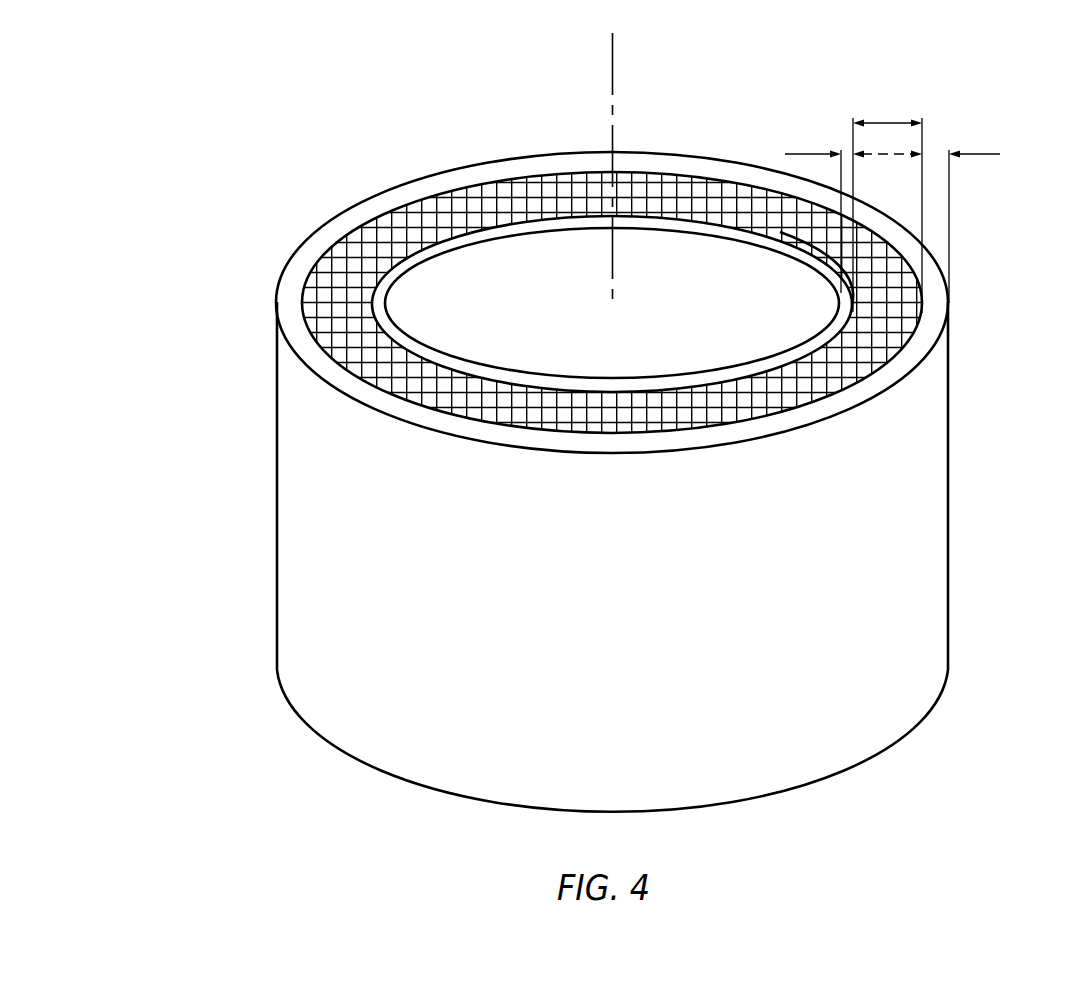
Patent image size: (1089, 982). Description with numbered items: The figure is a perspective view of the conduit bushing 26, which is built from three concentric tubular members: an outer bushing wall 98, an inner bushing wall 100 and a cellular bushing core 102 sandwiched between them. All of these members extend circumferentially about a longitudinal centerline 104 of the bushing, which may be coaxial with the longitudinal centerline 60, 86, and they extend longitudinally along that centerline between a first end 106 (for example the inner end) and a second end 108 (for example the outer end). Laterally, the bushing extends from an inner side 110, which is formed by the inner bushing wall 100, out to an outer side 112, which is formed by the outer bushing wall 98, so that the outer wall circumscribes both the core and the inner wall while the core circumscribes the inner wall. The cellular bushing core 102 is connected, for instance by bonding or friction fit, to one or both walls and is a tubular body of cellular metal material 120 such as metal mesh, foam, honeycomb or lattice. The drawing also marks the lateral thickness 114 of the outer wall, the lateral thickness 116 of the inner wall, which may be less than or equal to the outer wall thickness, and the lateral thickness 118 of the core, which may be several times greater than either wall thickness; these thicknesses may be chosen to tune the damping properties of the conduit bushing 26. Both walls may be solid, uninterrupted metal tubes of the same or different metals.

The conduit bushing 26 is at (620, 415).
The outer bushing wall 98 is at (370, 178).
The inner bushing wall 100 is at (516, 205).
The cellular bushing core 102 is at (450, 178).
The longitudinal centerline 60 is at (524, 161).
The longitudinal centerline 86 is at (524, 161).
The longitudinal centerline 104 is at (612, 49).
The first end 106 is at (322, 745).
The second end 108 is at (303, 262).
The inner side 110 is at (386, 302).
The outer side 112 is at (277, 364).
The lateral thickness 114 is at (993, 154).
The lateral thickness 116 is at (806, 154).
The lateral thickness 118 is at (889, 118).
The cellular metal material 120 is at (892, 322).